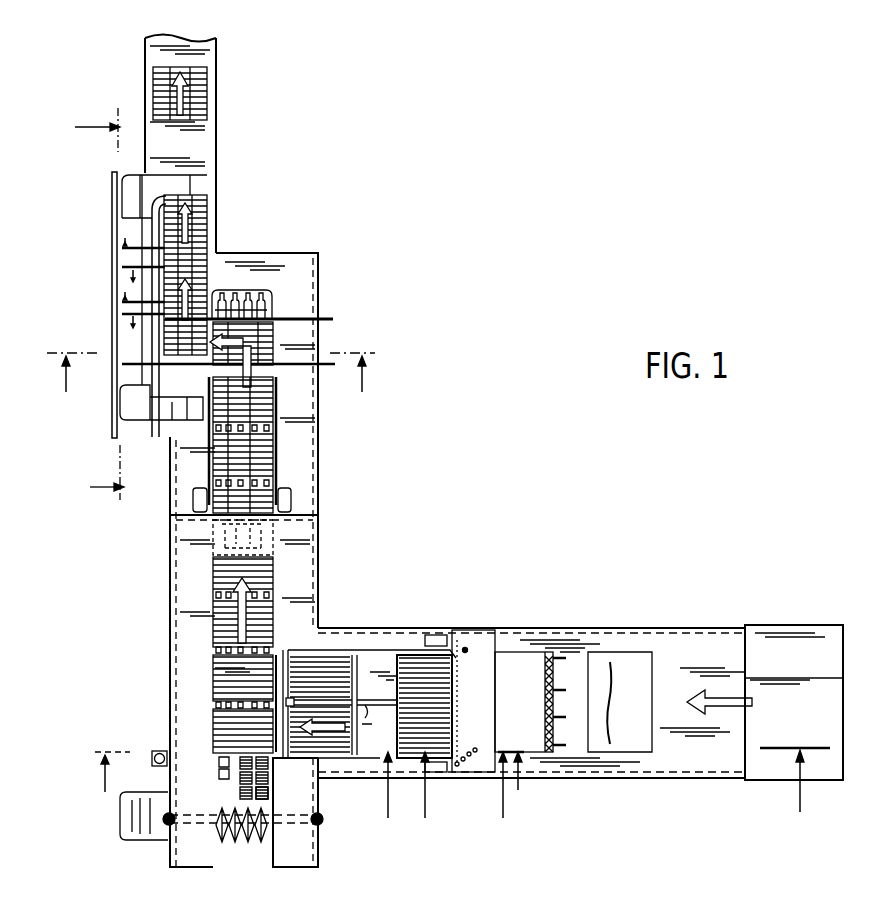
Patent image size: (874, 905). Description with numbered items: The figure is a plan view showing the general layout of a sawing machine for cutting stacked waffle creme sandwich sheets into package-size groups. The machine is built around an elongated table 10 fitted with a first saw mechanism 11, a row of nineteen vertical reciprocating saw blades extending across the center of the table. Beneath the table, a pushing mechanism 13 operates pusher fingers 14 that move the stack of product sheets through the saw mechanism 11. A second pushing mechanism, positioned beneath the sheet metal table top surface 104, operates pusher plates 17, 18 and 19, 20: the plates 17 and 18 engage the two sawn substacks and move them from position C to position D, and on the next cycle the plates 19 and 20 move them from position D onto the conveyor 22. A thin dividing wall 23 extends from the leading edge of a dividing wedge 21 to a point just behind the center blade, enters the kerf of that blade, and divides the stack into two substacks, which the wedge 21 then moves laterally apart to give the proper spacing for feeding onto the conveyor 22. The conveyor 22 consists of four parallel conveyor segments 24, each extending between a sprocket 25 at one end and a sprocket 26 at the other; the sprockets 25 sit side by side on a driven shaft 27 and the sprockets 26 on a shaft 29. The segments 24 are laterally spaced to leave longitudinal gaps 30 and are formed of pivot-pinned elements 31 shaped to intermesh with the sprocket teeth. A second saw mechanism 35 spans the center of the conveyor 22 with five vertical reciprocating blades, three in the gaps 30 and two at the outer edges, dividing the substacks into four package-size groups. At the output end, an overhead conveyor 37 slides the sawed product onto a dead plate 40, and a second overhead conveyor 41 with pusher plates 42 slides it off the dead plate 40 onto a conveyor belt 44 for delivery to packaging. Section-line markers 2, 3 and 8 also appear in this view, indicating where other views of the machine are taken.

The air supply / return box 2 is at (612, 732).
The section line / air flow arrow 3 is at (309, 794).
The air inlet arrows 8 is at (470, 795).
The elongated table 10 is at (528, 640).
The first saw mechanism 11 is at (478, 645).
The pushing mechanism 13 is at (211, 384).
The pusher fingers 14 is at (562, 788).
The pusher plate 17 is at (355, 672).
The pusher plate 18 is at (362, 758).
The pusher plate 19 is at (213, 660).
The pusher plate 20 is at (213, 722).
The dividing wedge 21 is at (294, 702).
The conveyor 22 is at (285, 480).
The dividing wall 23 is at (380, 706).
The conveyor segments 24 is at (268, 765).
The sprocket 25 is at (256, 842).
The sprocket 26 is at (249, 292).
The driven shaft 27 is at (186, 835).
The shaft 29 is at (266, 306).
The gaps 30 is at (240, 776).
The elements 31 is at (258, 796).
The second saw mechanism 35 is at (290, 540).
The overhead conveyor 37 is at (330, 319).
The dead plate 40 is at (186, 384).
The second overhead conveyor 41 is at (108, 232).
The pusher plates 42 is at (198, 191).
The conveyor belt 44 is at (203, 137).
The sheet metal table top surface 104 is at (378, 672).